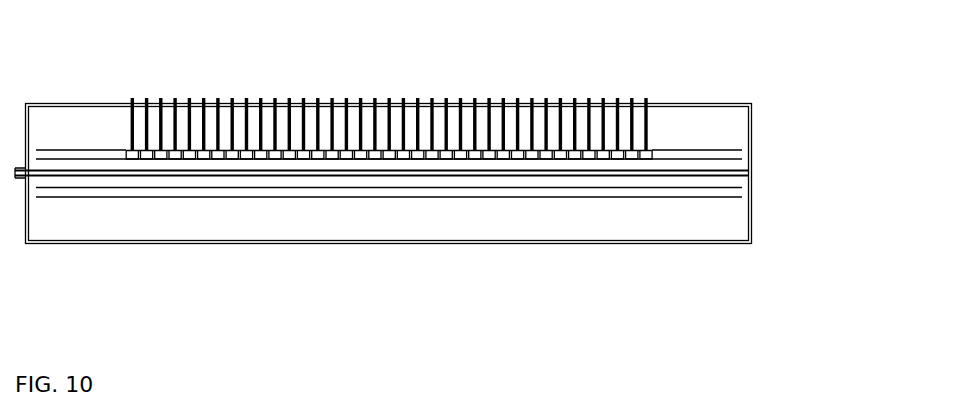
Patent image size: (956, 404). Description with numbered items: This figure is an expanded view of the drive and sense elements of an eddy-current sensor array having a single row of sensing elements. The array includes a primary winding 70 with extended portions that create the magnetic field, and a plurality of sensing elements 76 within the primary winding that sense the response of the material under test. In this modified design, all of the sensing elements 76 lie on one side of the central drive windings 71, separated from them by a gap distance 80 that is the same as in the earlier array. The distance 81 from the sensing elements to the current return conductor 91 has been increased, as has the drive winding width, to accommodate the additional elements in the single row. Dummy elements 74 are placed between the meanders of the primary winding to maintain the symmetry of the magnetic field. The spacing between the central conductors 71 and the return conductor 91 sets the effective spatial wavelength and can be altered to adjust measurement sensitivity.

The primary winding 70 is at (485, 243).
The central drive windings 71 is at (755, 175).
The dummy elements 74 is at (698, 198).
The sensing elements 76 is at (564, 150).
The gap distance 80 is at (713, 166).
The distance to return conductor 81 is at (657, 126).
The current return conductor 91 is at (125, 245).